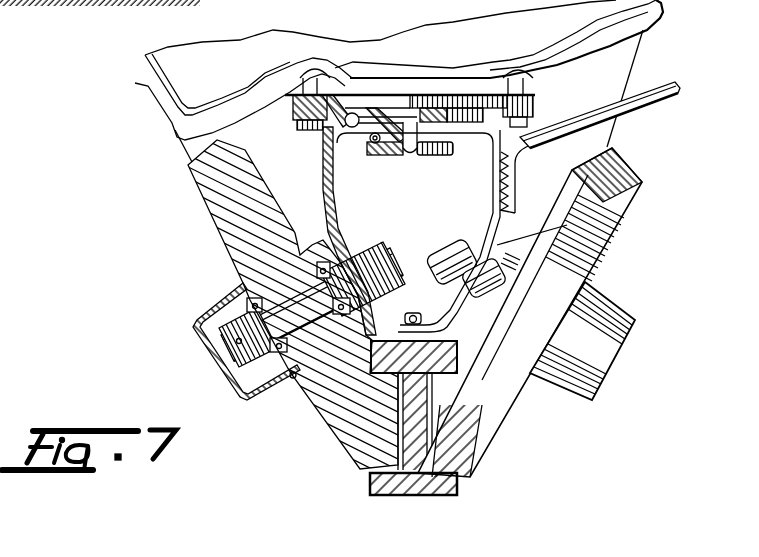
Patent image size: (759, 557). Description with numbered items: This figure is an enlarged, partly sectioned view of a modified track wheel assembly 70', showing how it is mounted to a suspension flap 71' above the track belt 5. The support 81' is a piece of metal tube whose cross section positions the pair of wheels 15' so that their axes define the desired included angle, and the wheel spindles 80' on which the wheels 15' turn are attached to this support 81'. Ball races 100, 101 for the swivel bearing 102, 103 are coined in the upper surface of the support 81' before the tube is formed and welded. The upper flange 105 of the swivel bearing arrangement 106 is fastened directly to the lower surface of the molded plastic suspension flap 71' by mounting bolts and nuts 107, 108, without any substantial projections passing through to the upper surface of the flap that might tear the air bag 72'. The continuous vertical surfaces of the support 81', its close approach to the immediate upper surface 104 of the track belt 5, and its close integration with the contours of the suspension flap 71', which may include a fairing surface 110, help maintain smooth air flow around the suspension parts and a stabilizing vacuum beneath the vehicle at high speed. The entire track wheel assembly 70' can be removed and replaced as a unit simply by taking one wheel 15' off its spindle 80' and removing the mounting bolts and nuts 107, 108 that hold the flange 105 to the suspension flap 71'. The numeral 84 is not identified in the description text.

The roof panel 84 is at (20, 1).
The track belt 5 is at (458, 480).
The wheel 15' is at (285, 311).
The track wheel assembly 70' is at (228, 237).
The suspension flap 71' is at (584, 47).
The air bag 72' is at (483, 73).
The wheel spindle 80' is at (418, 231).
The support 81' is at (332, 231).
The ball race 100 is at (360, 145).
The ball race 101 is at (327, 123).
The swivel bearing 102 is at (463, 140).
The swivel bearing 103 is at (523, 147).
The upper surface of the track belt 104 is at (400, 318).
The upper flange 105 is at (290, 92).
The swivel bearing arrangement 106 is at (300, 133).
The mounting bolt 107 is at (338, 84).
The mounting nut 108 is at (497, 84).
The fairing surface 110 is at (589, 137).